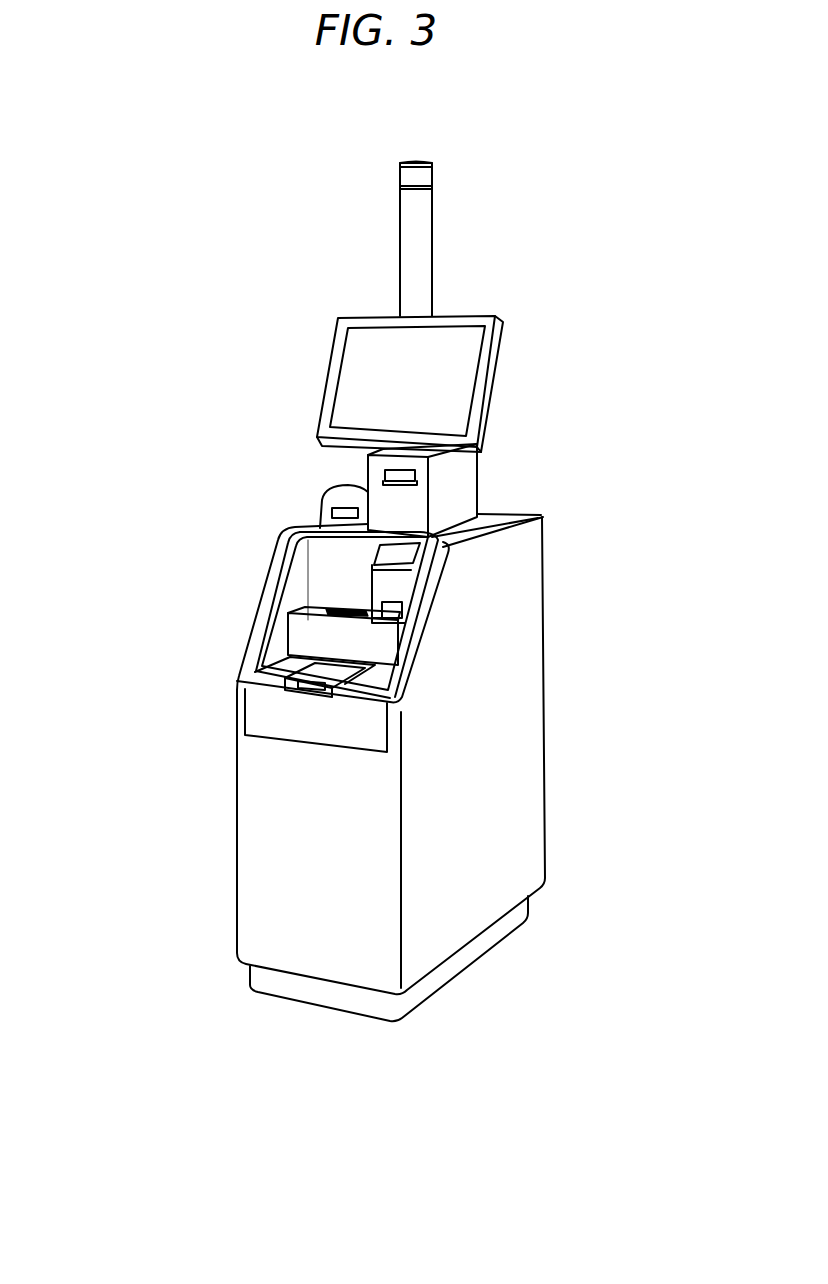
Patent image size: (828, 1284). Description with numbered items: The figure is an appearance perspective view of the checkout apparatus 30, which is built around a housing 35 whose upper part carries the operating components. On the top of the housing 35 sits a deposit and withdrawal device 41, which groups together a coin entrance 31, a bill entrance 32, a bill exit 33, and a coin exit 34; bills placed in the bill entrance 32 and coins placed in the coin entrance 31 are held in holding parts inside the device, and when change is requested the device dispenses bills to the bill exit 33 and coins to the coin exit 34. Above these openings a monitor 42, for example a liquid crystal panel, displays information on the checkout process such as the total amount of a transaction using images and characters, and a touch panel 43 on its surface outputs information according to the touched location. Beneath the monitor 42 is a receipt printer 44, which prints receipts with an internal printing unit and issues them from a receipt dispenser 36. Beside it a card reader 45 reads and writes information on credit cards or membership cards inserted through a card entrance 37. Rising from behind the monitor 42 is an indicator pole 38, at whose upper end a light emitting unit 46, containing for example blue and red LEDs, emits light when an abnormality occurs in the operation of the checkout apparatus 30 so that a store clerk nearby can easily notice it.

The checkout apparatus 30 is at (552, 149).
The coin entrance 31 is at (323, 523).
The bill entrance 32 is at (317, 607).
The bill exit 33 is at (340, 612).
The coin exit 34 is at (283, 672).
The housing 35 is at (498, 723).
The receipt dispenser 36 is at (418, 487).
The card entrance 37 is at (325, 508).
The indicator pole 38 is at (413, 253).
The deposit and withdrawal device 41 is at (165, 503).
The monitor 42 is at (449, 388).
The touch panel 43 is at (370, 335).
The receipt printer 44 is at (447, 474).
The card reader 45 is at (335, 497).
The light emitting unit 46 is at (418, 177).